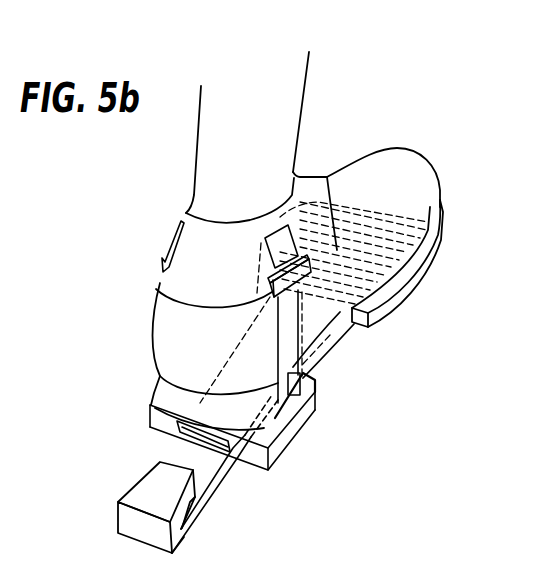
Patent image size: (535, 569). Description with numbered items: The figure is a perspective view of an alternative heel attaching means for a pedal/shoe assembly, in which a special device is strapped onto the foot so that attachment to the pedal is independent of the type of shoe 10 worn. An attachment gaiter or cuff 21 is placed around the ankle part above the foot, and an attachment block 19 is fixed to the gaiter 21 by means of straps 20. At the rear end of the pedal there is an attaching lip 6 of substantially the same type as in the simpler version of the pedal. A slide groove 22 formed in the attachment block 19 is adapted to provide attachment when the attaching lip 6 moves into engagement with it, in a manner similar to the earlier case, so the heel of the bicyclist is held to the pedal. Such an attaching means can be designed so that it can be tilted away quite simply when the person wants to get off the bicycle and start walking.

The attaching lip 6 is at (140, 468).
The shoe 10 is at (152, 333).
The attachment block 19 is at (290, 405).
The straps 20 is at (258, 295).
The attachment gaiter or cuff 21 is at (210, 258).
The slide groove 22 is at (219, 455).